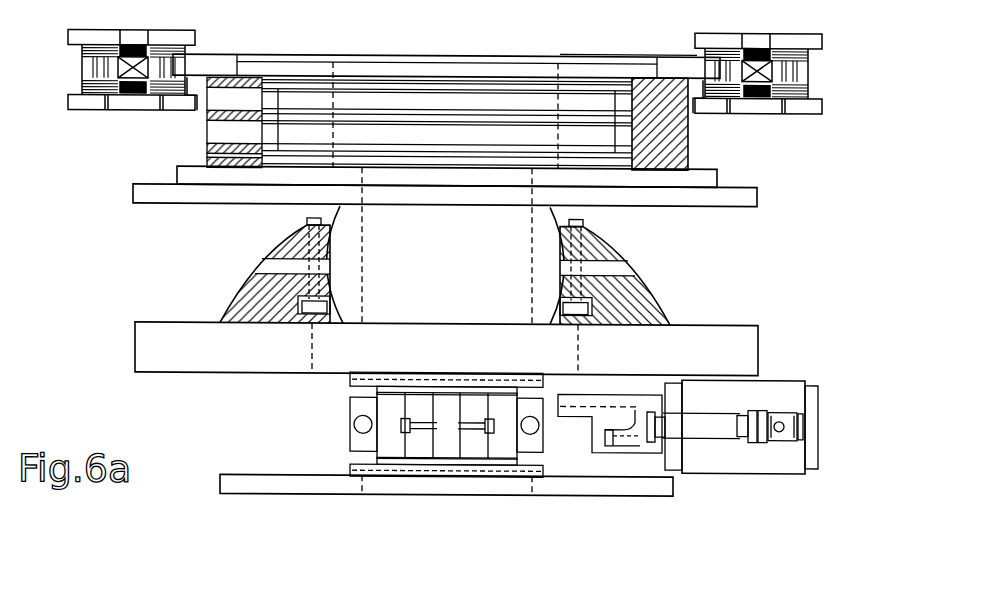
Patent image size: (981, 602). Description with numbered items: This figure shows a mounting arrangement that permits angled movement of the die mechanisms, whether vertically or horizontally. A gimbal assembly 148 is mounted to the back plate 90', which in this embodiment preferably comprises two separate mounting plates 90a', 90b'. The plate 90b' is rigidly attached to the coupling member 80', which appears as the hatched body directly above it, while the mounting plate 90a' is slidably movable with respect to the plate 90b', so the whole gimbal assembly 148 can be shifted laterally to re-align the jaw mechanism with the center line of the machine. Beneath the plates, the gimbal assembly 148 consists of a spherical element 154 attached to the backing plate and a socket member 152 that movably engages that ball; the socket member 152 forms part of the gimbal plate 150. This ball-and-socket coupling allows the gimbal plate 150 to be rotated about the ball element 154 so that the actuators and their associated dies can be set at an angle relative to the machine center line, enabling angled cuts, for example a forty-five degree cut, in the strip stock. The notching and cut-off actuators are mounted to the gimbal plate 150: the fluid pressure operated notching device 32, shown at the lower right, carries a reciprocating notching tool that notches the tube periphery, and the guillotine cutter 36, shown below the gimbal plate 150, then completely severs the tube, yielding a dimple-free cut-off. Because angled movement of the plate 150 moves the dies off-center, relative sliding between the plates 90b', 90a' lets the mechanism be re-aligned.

The coupling member 80' is at (477, 111).
The back plate 90' is at (451, 191).
The mounting plate 90a' is at (499, 198).
The mounting plate 90b' is at (513, 169).
The gimbal assembly 148 is at (539, 267).
The gimbal plate 150 is at (733, 345).
The socket member 152 is at (628, 299).
The spherical element 154 is at (462, 278).
The guillotine cutter 36 is at (343, 434).
The notching device 32 is at (738, 472).